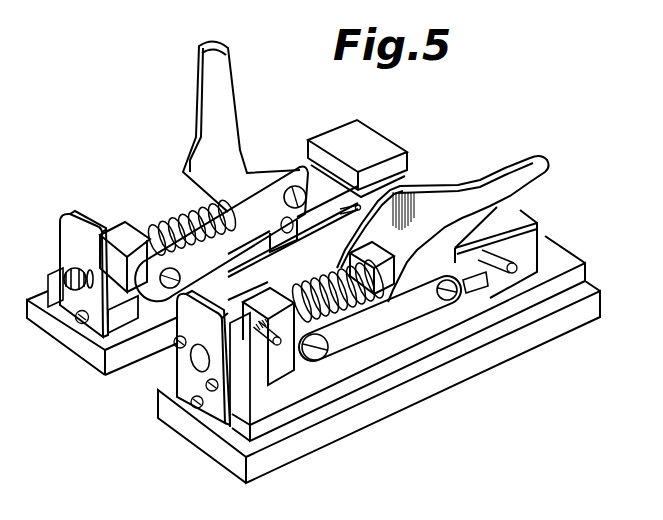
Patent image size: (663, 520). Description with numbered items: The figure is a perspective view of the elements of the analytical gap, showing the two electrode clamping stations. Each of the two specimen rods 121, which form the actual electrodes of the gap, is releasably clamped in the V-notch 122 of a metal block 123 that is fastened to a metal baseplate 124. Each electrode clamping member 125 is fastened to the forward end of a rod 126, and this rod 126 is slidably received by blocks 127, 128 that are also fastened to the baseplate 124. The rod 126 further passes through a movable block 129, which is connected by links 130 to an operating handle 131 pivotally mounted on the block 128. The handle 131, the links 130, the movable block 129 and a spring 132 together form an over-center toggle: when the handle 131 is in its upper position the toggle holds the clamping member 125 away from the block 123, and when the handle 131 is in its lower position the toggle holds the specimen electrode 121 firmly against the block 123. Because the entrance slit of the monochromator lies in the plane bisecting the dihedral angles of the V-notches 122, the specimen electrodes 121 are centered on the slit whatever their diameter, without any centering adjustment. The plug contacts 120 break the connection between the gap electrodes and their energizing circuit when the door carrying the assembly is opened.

The plug contacts 120 is at (183, 370).
The specimen rod 121 is at (505, 268).
The V-notch 122 is at (525, 224).
The metal block 123 is at (515, 220).
The metal baseplate 124 is at (390, 367).
The electrode clamping member 125 is at (467, 268).
The rod 126 is at (268, 346).
The block 127 is at (238, 382).
The block 128 is at (393, 258).
The movable block 129 is at (127, 230).
The links 130 is at (400, 310).
The operating handle 131 is at (502, 172).
The spring 132 is at (363, 313).